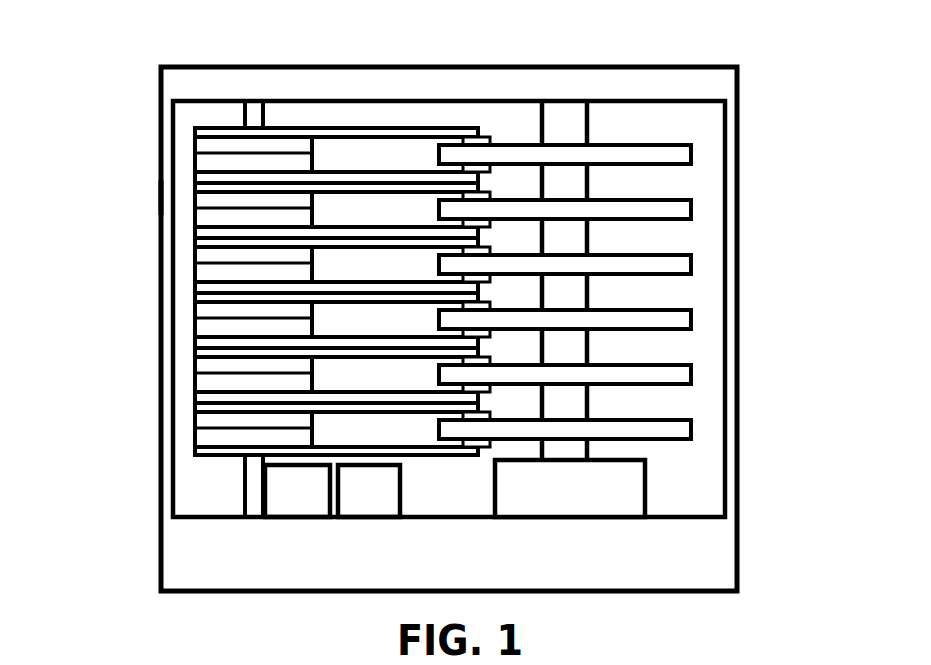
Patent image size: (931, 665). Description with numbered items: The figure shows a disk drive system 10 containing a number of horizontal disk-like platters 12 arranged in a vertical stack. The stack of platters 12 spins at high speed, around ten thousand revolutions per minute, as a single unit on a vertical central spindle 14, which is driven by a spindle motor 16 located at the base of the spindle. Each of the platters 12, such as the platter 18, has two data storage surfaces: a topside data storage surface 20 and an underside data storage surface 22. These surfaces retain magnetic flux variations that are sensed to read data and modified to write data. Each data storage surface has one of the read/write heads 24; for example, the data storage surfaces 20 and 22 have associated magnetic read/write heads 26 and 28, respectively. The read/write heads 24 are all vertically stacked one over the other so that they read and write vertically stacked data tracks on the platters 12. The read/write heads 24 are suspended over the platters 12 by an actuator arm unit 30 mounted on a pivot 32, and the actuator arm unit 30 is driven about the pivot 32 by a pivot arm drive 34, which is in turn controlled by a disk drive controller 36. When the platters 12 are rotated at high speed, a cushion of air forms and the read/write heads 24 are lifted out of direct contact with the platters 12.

The disk drive system 10 is at (120, 197).
The platters 12 is at (672, 480).
The vertical central spindle 14 is at (617, 107).
The spindle motor 16 is at (577, 498).
The platter 18 is at (642, 154).
The topside data storage surface 20 is at (692, 147).
The underside data storage surface 22 is at (690, 165).
The read/write heads 24 is at (482, 478).
The magnetic read/write head 26 is at (484, 136).
The magnetic read/write head 28 is at (494, 176).
The actuator arm unit 30 is at (368, 106).
The pivot 32 is at (268, 118).
The pivot arm drive 34 is at (310, 505).
The disk drive controller 36 is at (382, 505).